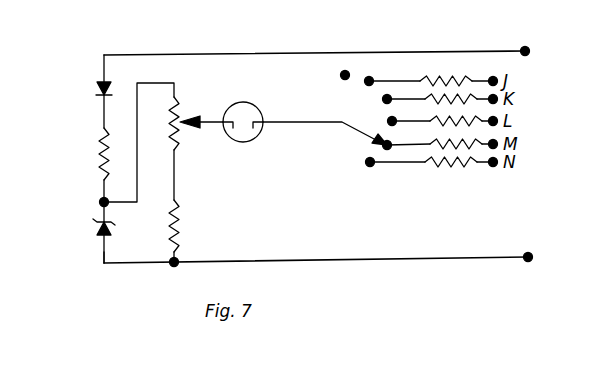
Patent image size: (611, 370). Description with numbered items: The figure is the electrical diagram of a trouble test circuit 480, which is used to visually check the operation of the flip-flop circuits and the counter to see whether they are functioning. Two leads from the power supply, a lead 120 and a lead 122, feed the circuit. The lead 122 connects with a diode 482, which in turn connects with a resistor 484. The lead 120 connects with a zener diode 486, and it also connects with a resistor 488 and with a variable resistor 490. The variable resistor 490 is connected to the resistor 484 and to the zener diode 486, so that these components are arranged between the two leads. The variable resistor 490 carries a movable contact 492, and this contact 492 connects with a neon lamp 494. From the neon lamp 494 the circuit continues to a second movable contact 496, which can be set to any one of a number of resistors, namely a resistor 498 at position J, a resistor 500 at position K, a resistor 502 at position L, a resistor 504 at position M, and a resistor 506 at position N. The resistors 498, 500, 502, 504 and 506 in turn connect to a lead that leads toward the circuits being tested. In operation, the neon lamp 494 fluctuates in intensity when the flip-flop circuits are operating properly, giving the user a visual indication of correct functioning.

The lead 120 is at (480, 257).
The lead 122 is at (440, 52).
The trouble test circuit 480 is at (102, 274).
The diode 482 is at (98, 92).
The resistor 484 is at (100, 157).
The zener diode 486 is at (98, 228).
The resistor 488 is at (180, 205).
The variable resistor 490 is at (180, 101).
The movable contact 492 is at (190, 127).
The neon lamp 494 is at (240, 103).
The movable contact 496 is at (352, 131).
The resistor 498 is at (432, 82).
The resistor 500 is at (428, 90).
The resistor 502 is at (432, 117).
The resistor 504 is at (484, 142).
The resistor 506 is at (468, 166).